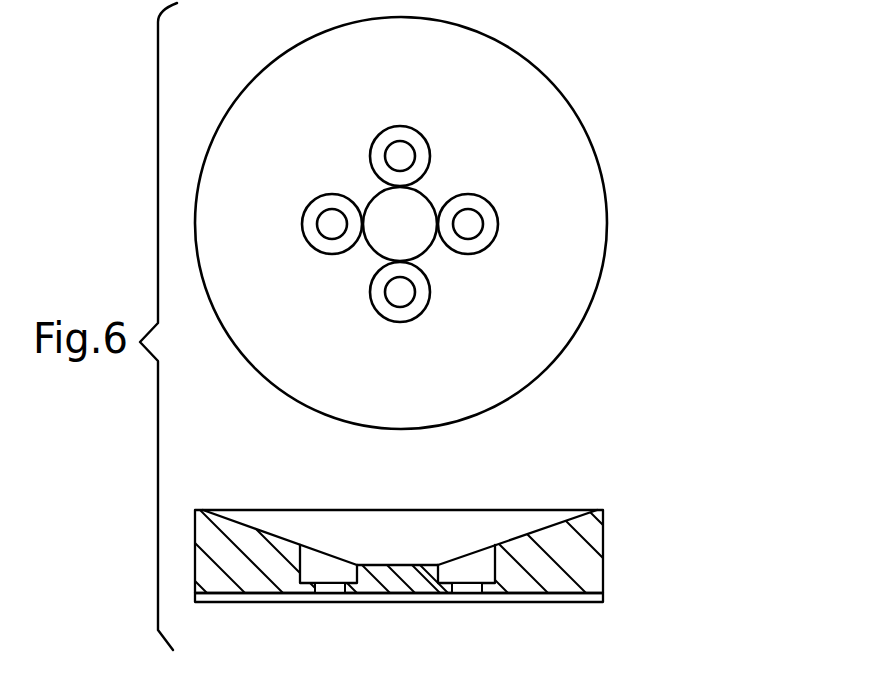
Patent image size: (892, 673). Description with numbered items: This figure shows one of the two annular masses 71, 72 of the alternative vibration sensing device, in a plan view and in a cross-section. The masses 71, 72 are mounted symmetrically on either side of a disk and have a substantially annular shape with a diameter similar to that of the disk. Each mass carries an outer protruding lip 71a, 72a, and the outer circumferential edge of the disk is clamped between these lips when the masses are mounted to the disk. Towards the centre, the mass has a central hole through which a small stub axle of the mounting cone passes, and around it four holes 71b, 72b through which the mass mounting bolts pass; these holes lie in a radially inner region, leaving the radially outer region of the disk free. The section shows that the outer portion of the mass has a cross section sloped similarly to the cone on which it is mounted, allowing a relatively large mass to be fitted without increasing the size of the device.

The mass 71 is at (406, 217).
The mass 72 is at (503, 65).
The outer protruding lip 71a is at (468, 619).
The outer protruding lip 72a is at (588, 598).
The holes 71b is at (469, 382).
The holes 72b is at (422, 294).